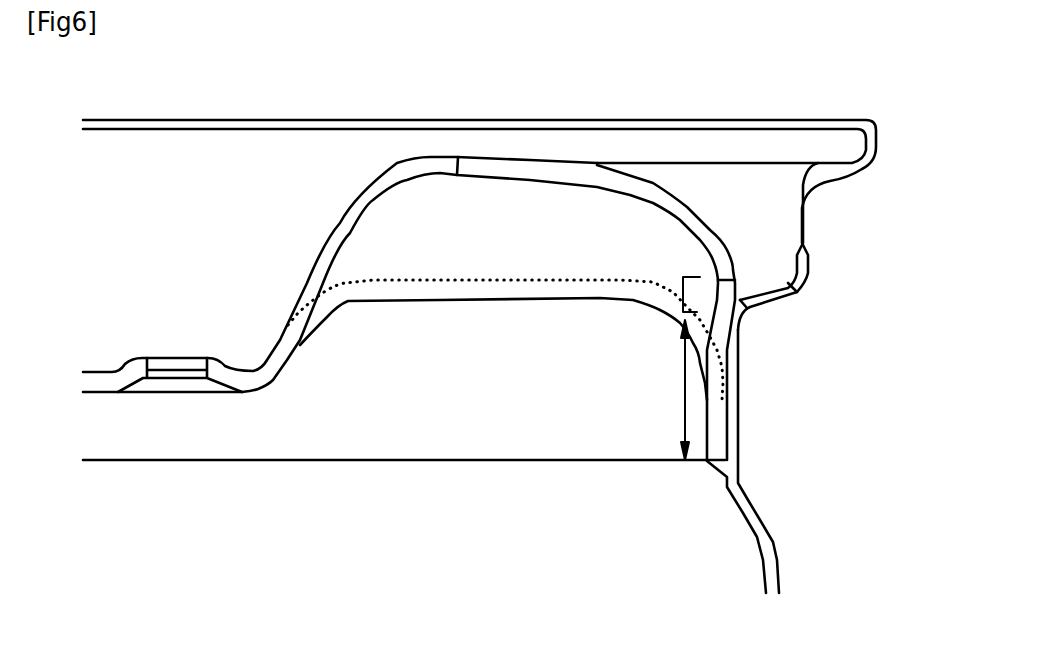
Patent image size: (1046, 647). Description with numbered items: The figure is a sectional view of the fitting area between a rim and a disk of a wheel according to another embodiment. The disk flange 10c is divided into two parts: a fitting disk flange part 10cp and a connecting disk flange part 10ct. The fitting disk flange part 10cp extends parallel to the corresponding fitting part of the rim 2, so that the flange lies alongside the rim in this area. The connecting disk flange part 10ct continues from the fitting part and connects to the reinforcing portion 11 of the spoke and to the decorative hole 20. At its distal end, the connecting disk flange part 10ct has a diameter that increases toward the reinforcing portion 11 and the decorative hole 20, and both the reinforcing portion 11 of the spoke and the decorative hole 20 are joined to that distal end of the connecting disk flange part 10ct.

The decorative hole 20 is at (522, 157).
The rim 2 is at (738, 405).
The reinforcing portion 11 is at (480, 258).
The disk flange 10c is at (545, 330).
The connecting disk flange part 10ct is at (677, 297).
The fitting disk flange part 10cp is at (673, 378).